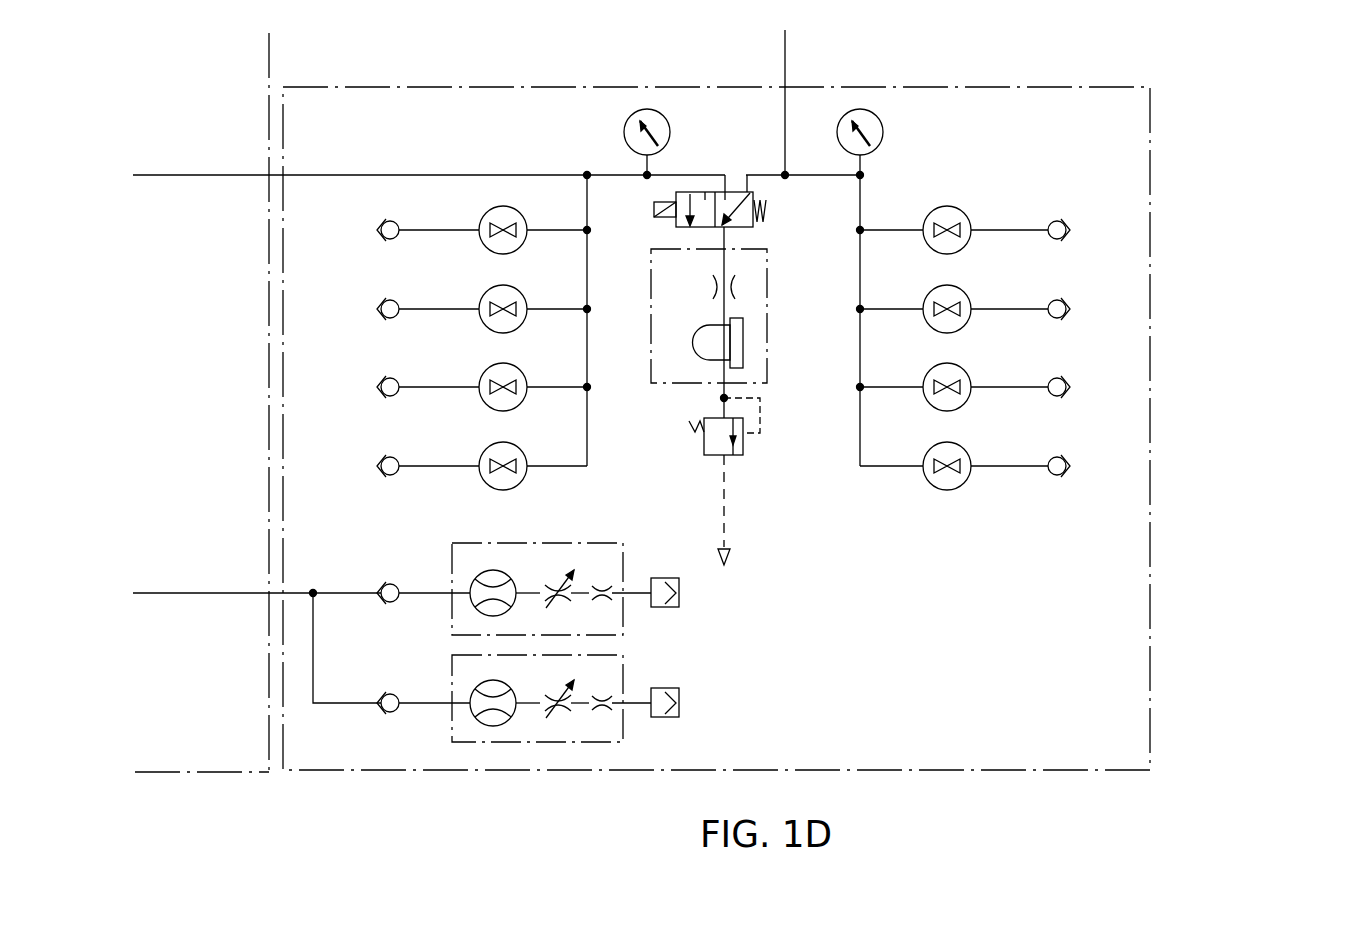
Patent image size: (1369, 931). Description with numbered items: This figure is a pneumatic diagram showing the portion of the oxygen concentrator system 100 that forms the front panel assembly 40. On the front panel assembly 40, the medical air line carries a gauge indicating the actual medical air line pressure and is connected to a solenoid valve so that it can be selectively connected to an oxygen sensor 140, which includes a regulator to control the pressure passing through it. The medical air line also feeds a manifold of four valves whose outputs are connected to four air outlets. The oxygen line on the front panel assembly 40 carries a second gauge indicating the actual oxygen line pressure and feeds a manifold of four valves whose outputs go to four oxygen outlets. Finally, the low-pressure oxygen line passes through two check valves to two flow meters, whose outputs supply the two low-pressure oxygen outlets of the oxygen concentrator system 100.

The oxygen concentrator system 100 is at (1252, 222).
The front panel assembly 40 is at (1146, 352).
The oxygen sensor 140 is at (767, 350).